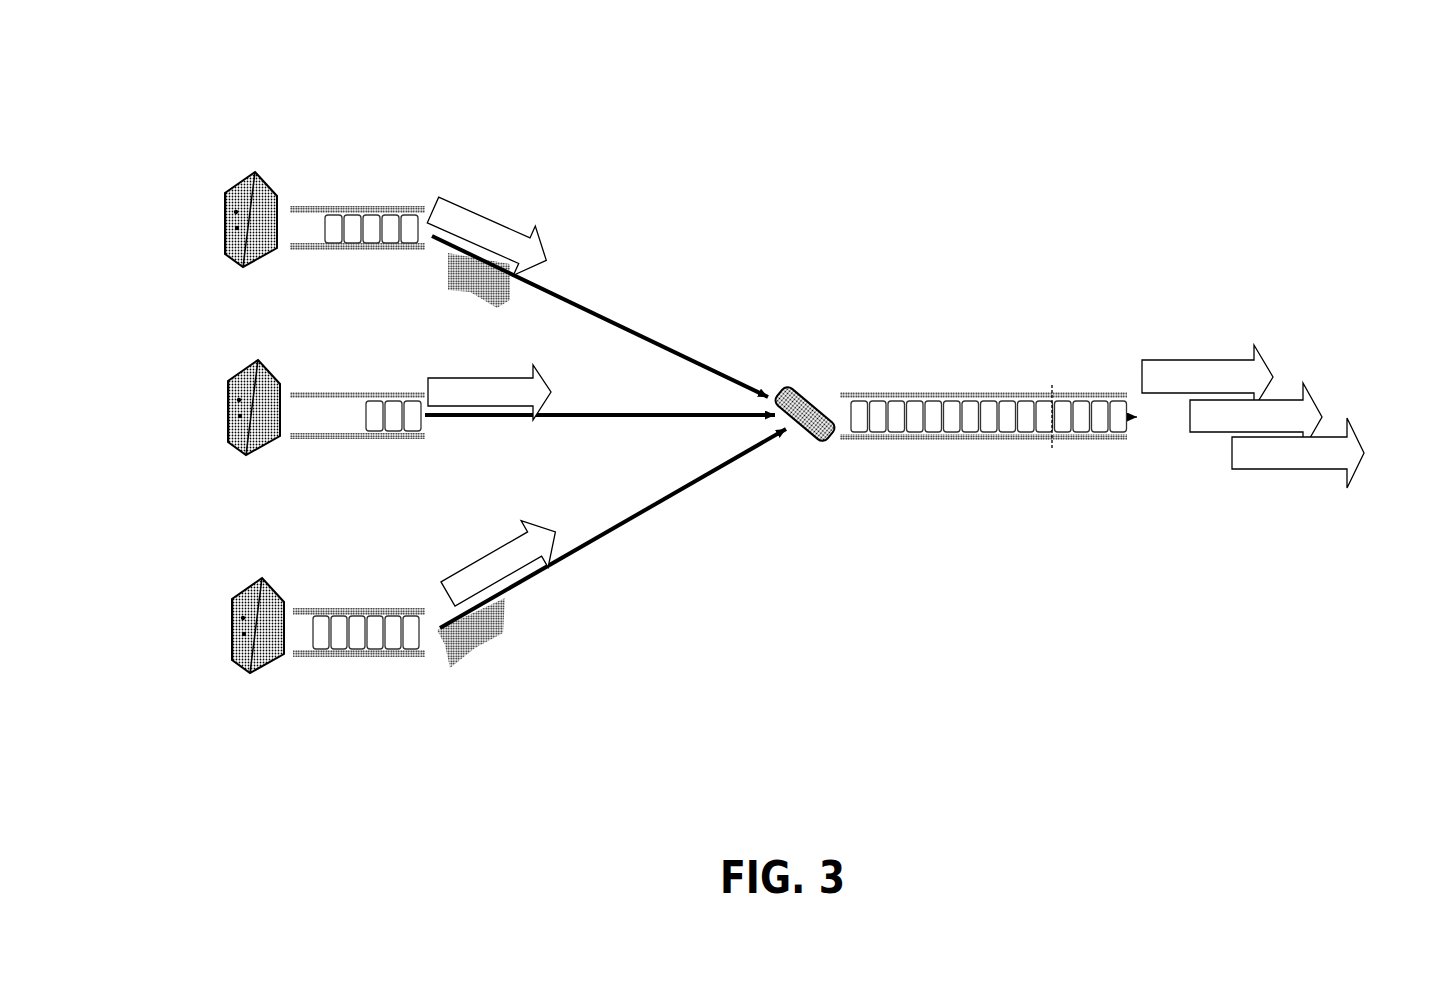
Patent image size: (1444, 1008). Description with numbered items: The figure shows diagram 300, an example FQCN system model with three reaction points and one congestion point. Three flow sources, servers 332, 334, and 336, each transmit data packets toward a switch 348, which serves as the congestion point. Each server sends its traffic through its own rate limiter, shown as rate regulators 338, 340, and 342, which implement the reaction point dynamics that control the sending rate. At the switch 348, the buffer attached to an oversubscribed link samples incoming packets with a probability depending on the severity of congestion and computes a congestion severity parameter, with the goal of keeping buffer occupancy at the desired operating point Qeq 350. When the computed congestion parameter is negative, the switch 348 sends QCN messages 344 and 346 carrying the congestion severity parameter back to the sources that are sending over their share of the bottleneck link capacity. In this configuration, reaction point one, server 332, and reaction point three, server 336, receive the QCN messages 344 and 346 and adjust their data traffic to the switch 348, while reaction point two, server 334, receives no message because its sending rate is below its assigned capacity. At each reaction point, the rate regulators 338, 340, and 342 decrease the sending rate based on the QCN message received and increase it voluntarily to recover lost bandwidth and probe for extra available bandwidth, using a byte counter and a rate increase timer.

The diagram 300 is at (1298, 83).
The server 332 is at (223, 182).
The server 334 is at (220, 372).
The server 336 is at (220, 595).
The rate regulator 338 is at (452, 184).
The rate regulator 340 is at (432, 368).
The rate regulator 342 is at (420, 540).
The QCN message 344 is at (622, 318).
The QCN message 346 is at (650, 555).
The switch 348 is at (806, 380).
The Qeq 350 is at (1002, 325).